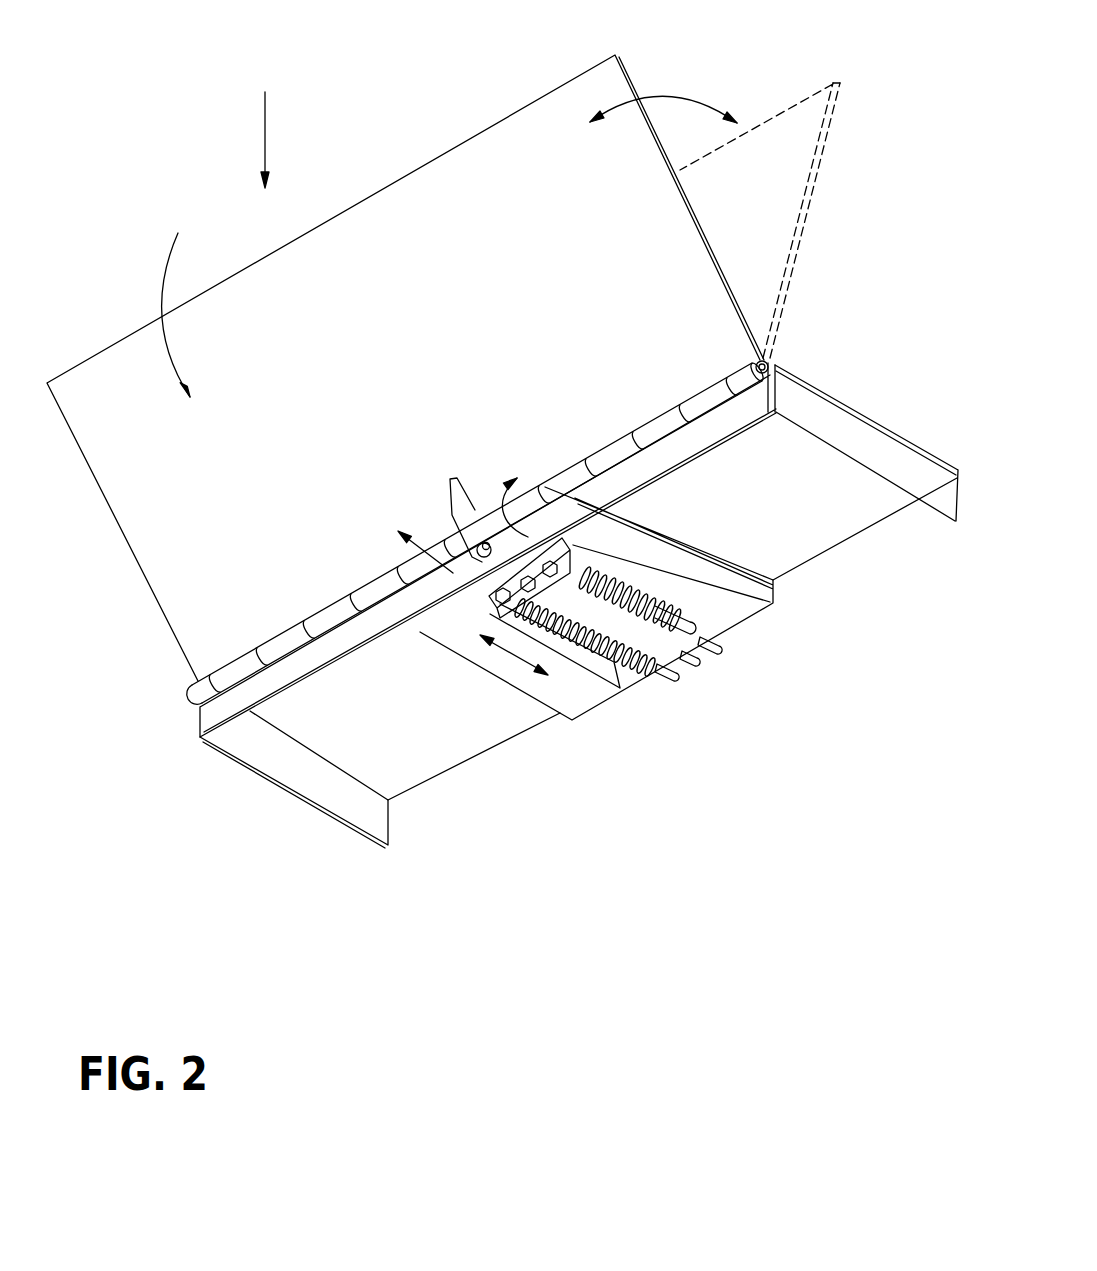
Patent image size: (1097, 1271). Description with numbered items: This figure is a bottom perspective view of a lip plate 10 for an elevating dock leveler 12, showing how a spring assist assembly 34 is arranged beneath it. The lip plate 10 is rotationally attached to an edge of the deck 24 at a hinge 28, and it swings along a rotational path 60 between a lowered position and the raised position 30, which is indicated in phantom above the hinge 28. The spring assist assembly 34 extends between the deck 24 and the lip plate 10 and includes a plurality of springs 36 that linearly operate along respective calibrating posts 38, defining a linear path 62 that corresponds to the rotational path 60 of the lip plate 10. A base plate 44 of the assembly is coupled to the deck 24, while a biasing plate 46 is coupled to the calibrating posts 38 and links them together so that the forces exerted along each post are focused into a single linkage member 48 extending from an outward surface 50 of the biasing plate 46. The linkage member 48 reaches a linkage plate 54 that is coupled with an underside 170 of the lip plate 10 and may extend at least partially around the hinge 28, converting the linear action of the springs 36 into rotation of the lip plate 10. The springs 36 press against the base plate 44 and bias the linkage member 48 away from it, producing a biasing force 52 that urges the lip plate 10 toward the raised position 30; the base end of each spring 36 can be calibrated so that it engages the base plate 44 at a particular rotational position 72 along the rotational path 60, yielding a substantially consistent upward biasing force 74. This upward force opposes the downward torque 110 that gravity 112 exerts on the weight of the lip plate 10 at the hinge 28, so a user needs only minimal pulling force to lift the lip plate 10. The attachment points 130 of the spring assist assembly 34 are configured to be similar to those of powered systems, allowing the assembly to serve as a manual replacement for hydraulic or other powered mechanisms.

The lip plate 10 is at (355, 195).
The elevating dock leveler 12 is at (802, 347).
The deck 24 is at (857, 420).
The hinge 28 is at (192, 691).
The raised position 30 is at (779, 113).
The spring assist assembly 34 is at (688, 692).
The springs 36 is at (633, 673).
The calibrating posts 38 is at (657, 604).
The base plate 44 is at (680, 655).
The biasing plate 46 is at (555, 553).
The linkage member 48 is at (490, 605).
The outward surface 50 is at (512, 650).
The biasing force 52 is at (475, 583).
The linkage plate 54 is at (450, 500).
The rotational path 60 is at (677, 97).
The linear path 62 is at (466, 612).
The rotational position 72 is at (472, 118).
The substantially consistent upward biasing force 74 is at (496, 482).
The downward torque 110 is at (158, 305).
The gravity 112 is at (262, 143).
The attachment points 130 is at (540, 540).
The underside 170 is at (475, 482).